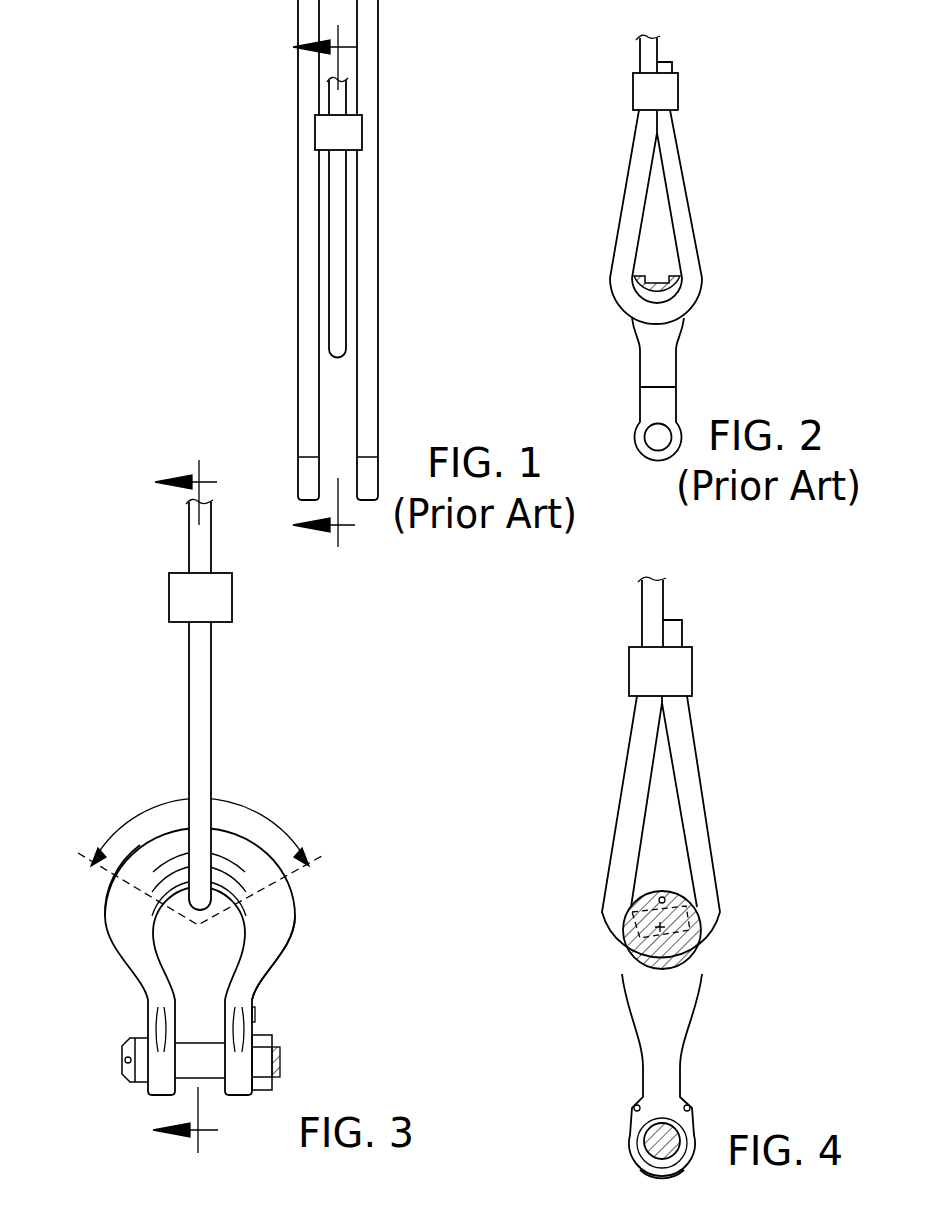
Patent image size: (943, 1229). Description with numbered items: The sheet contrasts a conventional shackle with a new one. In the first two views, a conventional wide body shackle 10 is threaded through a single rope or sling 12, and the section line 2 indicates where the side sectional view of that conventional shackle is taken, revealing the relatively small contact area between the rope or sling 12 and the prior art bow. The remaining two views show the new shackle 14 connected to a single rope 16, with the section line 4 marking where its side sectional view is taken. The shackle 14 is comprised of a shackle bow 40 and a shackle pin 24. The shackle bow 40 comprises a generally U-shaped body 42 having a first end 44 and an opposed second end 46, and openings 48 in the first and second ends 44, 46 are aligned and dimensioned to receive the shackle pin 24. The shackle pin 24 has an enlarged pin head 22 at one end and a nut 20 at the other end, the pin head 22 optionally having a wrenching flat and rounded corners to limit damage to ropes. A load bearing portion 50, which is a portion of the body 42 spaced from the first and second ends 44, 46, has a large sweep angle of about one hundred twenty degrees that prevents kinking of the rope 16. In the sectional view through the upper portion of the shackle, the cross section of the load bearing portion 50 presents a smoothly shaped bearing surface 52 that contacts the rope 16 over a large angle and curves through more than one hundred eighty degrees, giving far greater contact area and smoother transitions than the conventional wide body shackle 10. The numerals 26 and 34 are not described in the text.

In FIG. 1, the section line 2- 2 is at (327, 289).
In FIG. 3, the section line 4- 4 is at (188, 808).
In FIG. 1, the conventional wide body shackle 10 is at (392, 348).
In FIG. 2, the conventional wide body shackle 10 is at (686, 356).
In FIG. 1, the rope or sling 12 is at (343, 236).
In FIG. 2, the rope or sling 12 is at (682, 203).
In FIG. 3, the shackle 14 is at (208, 980).
In FIG. 4, the shackle 14 is at (628, 1077).
In FIG. 3, the rope 16 is at (203, 710).
In FIG. 4, the rope 16 is at (627, 793).
In FIG. 3, the nut 20 is at (267, 1040).
In FIG. 3, the pin head 22 is at (123, 1052).
In FIG. 3, the shackle pin 24 is at (140, 1078).
In FIG. 4, the shackle pin 24 is at (647, 1133).
In FIG. 4, the bow cross section 26 is at (705, 896).
In FIG. 4, the hole 34 is at (662, 893).
In FIG. 3, the shackle bow 40 is at (110, 923).
In FIG. 3, the body 42 is at (257, 980).
In FIG. 3, the first end 44 is at (240, 1097).
In FIG. 3, the second end 46 is at (158, 1097).
In FIG. 4, the second end 46 is at (642, 1175).
In FIG. 3, the openings 48 is at (230, 953).
In FIG. 3, the load bearing portion 50 is at (137, 815).
In FIG. 4, the bearing surface 52 is at (700, 917).